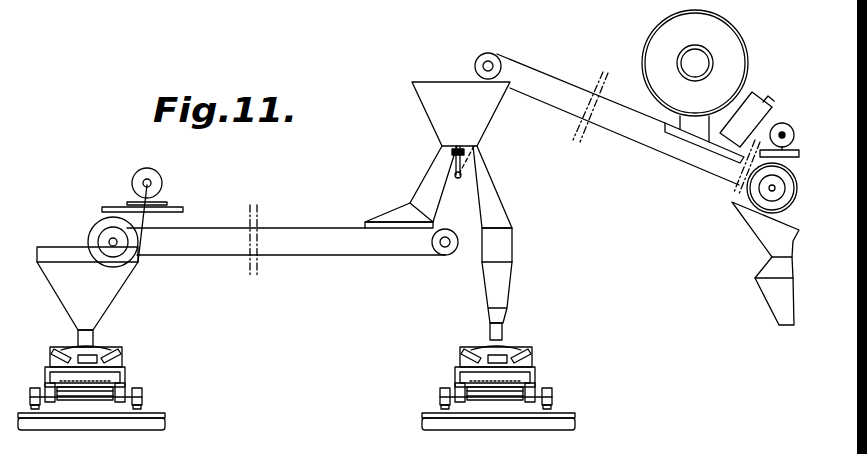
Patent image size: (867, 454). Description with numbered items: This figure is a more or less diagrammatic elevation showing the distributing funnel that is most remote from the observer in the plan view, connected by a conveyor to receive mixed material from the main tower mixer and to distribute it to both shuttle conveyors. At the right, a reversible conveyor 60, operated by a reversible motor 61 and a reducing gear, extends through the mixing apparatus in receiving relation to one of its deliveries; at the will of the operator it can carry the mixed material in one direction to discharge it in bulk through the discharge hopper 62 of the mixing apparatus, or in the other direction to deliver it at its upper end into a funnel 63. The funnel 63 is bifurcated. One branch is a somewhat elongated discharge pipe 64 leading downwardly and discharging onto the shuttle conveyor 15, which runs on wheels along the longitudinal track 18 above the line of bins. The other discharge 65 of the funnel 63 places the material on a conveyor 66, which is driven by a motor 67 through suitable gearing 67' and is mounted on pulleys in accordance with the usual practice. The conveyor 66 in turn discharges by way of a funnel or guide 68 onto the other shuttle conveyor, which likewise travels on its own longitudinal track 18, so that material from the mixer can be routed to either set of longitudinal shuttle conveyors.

The shuttle conveyor 15 is at (532, 347).
The longitudinal track 18 is at (140, 408).
The reversible conveyor 60 is at (550, 78).
The reversible motor 61 is at (786, 123).
The discharge hopper 62 is at (766, 292).
The funnel 63 is at (490, 125).
The discharge pipe 64 is at (502, 195).
The discharge 65 is at (423, 178).
The conveyor 66 is at (317, 228).
The motor 67 is at (164, 212).
The gearing 67' is at (161, 235).
The funnel or guide 68 is at (112, 302).